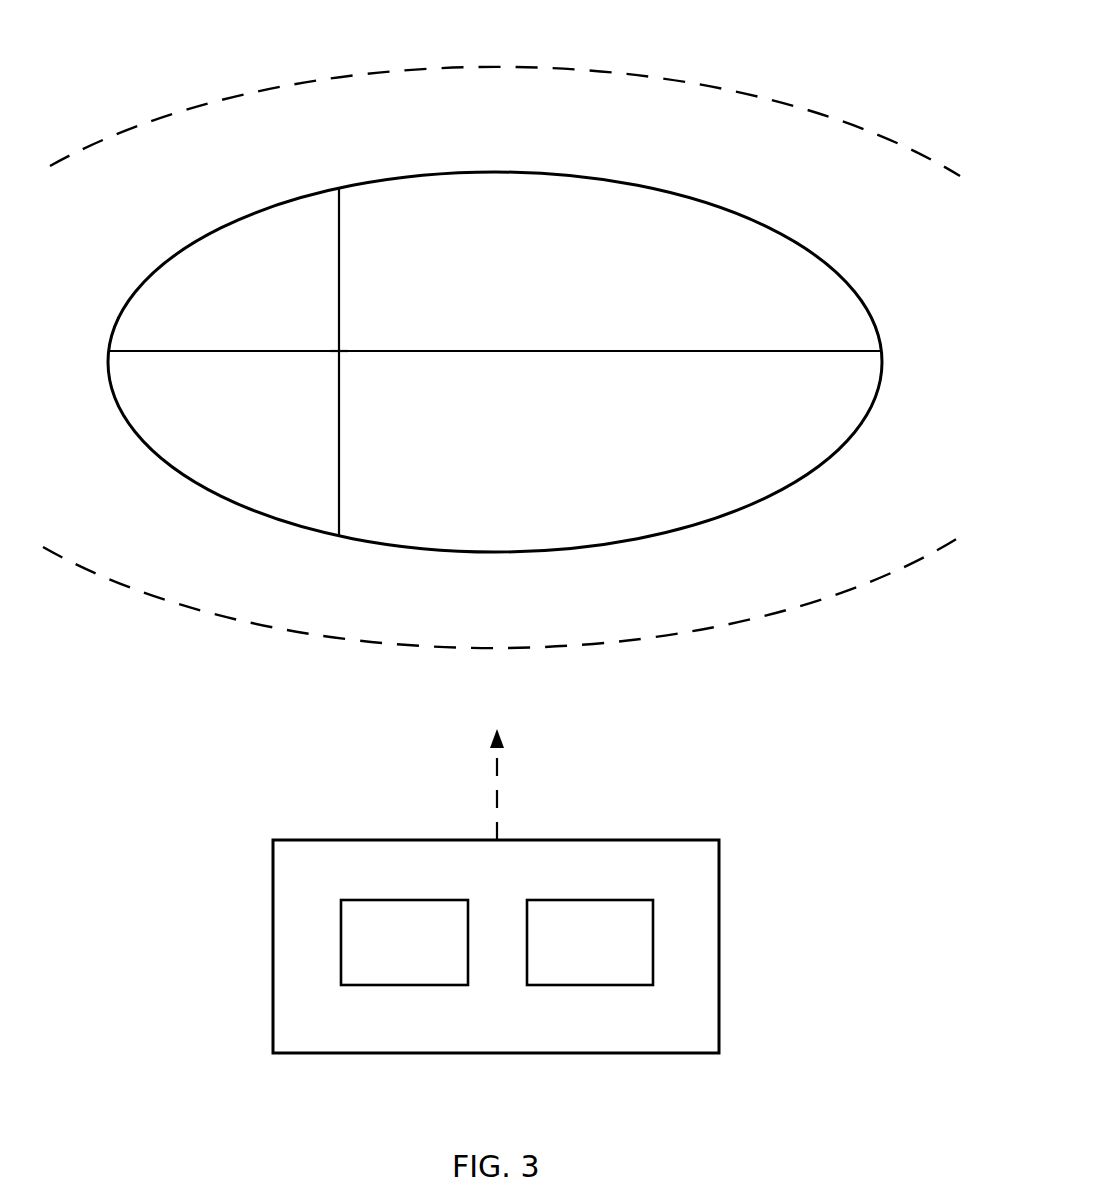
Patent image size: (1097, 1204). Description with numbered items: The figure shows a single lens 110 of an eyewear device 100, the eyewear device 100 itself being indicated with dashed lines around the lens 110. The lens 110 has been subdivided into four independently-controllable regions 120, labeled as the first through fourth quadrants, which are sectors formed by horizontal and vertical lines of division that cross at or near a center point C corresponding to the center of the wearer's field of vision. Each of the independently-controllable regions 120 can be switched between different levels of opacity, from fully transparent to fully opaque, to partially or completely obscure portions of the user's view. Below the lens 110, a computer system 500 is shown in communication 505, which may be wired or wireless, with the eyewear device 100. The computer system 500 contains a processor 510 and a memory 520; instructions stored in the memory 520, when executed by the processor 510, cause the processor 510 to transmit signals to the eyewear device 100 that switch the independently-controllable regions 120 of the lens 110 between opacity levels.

The eyewear device 100 is at (855, 116).
The lens 110 is at (258, 197).
The independently-controllable regions 120 is at (312, 266).
The center point C is at (349, 341).
The computer system 500 is at (243, 910).
The communication 505 is at (481, 797).
The processor 510 is at (433, 956).
The memory 520 is at (618, 956).